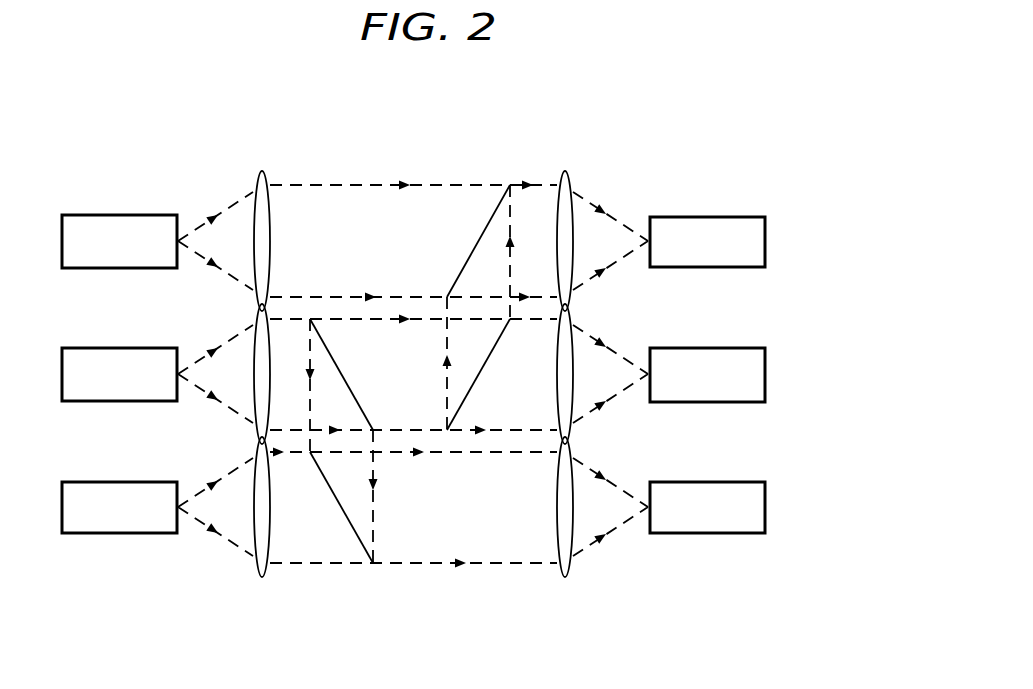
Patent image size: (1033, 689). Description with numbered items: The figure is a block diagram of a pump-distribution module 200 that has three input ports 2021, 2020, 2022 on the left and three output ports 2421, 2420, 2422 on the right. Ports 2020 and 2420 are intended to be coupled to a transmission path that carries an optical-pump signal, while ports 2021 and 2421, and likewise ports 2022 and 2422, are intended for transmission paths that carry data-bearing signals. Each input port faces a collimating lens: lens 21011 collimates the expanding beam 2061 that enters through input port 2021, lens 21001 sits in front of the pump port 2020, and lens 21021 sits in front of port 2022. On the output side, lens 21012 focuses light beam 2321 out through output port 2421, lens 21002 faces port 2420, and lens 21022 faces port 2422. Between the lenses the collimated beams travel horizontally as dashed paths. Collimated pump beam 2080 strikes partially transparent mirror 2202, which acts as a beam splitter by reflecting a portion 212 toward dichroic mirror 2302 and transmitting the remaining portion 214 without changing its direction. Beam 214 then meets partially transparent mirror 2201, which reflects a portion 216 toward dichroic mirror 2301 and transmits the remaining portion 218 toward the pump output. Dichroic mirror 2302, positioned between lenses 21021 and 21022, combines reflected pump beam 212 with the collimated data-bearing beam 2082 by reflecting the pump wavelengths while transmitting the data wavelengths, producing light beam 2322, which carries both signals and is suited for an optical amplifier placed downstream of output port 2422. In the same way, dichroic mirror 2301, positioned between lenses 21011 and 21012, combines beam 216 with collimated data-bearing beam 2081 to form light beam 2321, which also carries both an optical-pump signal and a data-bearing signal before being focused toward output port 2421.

The pump-distribution module 200 is at (446, 88).
The input port 2021 is at (127, 214).
The input port 2020 is at (127, 347).
The input port 2022 is at (127, 481).
The expanding beam 2061 is at (242, 198).
The collimating lens 21011 is at (262, 173).
The collimating lens 21001 is at (257, 310).
The collimating lens 21021 is at (261, 573).
The collimating lens 21012 is at (570, 177).
The collimating lens 21002 is at (570, 312).
The collimating lens 21022 is at (565, 576).
The collimated light beam 2081 is at (302, 227).
The collimated pump beam 2080 is at (287, 342).
The collimated light beam 2082 is at (292, 548).
The reflected portion of pump beam 212 is at (323, 404).
The transmitted portion of pump beam 214 is at (345, 328).
The reflected portion of beam 216 is at (463, 360).
The transmitted portion of beam 218 is at (505, 432).
The partially transparent mirror 2201 is at (484, 367).
The partially transparent mirror 2202 is at (336, 362).
The dichroic mirror 2301 is at (489, 222).
The dichroic mirror 2302 is at (330, 490).
The light beam 2321 is at (540, 200).
The light beam 2322 is at (409, 538).
The output port 2421 is at (707, 217).
The output port 2420 is at (707, 348).
The output port 2422 is at (707, 482).